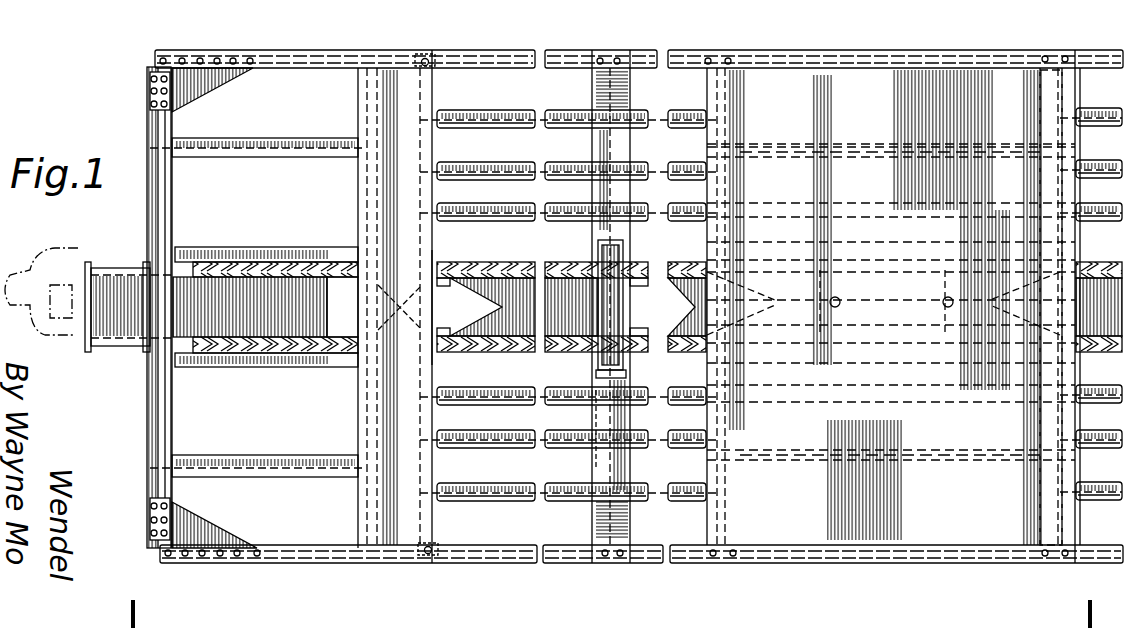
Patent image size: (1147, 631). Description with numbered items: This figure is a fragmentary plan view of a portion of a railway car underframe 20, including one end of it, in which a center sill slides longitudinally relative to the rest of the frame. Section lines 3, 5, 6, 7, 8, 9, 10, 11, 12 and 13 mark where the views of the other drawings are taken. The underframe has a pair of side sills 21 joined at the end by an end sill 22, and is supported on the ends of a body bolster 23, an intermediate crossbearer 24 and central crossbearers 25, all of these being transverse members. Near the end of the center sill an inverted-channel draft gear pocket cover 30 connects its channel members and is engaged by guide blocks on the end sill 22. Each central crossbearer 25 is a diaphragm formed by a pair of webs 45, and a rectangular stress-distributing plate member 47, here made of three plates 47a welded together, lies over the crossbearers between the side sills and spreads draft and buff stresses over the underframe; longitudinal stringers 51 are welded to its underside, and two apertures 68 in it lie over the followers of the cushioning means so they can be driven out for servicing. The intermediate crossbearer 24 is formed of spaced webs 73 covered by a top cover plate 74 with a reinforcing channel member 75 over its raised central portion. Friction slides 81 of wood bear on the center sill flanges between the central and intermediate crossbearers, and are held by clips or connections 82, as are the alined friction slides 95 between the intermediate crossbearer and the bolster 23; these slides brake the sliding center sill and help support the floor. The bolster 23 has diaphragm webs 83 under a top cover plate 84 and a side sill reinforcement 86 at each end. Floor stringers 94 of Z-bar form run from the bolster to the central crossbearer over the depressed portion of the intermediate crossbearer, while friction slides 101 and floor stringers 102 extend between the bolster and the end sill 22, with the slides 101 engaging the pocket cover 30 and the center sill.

The underframe 20 is at (270, 561).
The side sill 21 is at (826, 68).
The end sill 22 is at (146, 433).
The body bolster 23 is at (357, 508).
The intermediate crossbearer 24 is at (595, 371).
The central crossbearer 25 is at (704, 370).
The draft gear pocket cover 30 is at (318, 305).
The web 45 is at (1058, 170).
The stress-distributing plate member 47 is at (900, 434).
The plate 47a is at (743, 97).
The longitudinal stringer 51 is at (898, 170).
The aperture 68 is at (841, 302).
The web 73 is at (615, 150).
The top cover plate 74 is at (621, 475).
The reinforcing channel member 75 is at (618, 258).
The friction slide 81 is at (680, 268).
The clip or connection 82 is at (443, 286).
The web 83 is at (415, 502).
The top cover plate 84 is at (432, 258).
The side sill reinforcement 86 is at (437, 69).
The floor stringer 94 is at (503, 178).
The friction slide 95 is at (515, 268).
The friction slide 101 is at (244, 339).
The floor stringer 102 is at (209, 158).
The section line 3- 3 is at (572, 292).
The section line 5- 5 is at (508, 292).
The section line 6- 6 is at (975, 20).
The section line 7- 7 is at (888, 20).
The section line 8- 8 is at (742, 20).
The section line 9- 9 is at (645, 20).
The section line 10- 10 is at (518, 146).
The section line 11- 11 is at (393, 22).
The section line 12- 12 is at (265, 183).
The section line 13- 13 is at (113, 72).